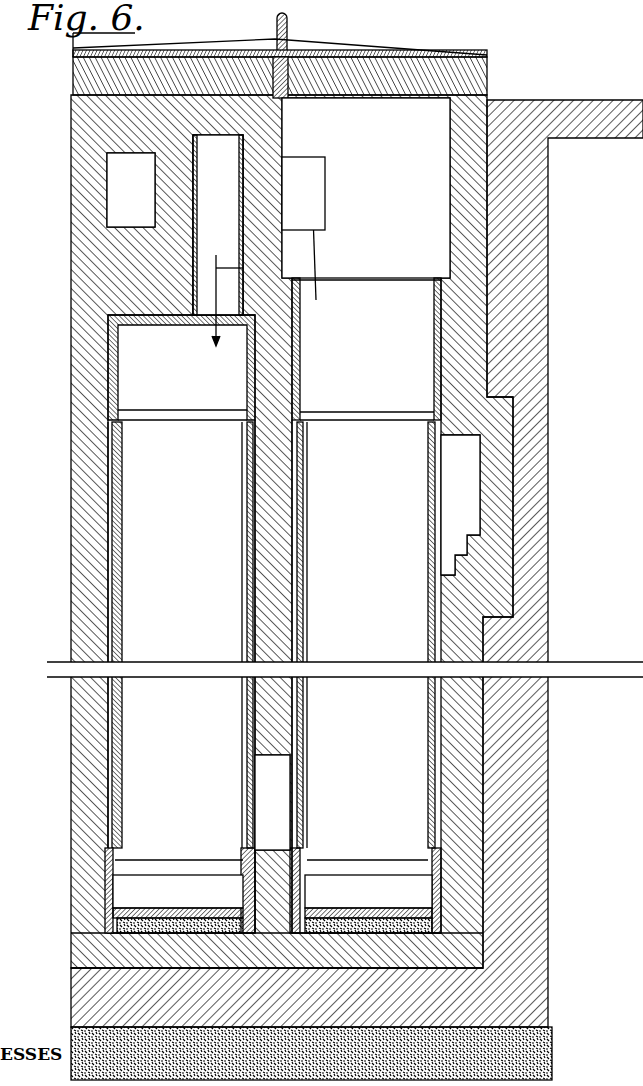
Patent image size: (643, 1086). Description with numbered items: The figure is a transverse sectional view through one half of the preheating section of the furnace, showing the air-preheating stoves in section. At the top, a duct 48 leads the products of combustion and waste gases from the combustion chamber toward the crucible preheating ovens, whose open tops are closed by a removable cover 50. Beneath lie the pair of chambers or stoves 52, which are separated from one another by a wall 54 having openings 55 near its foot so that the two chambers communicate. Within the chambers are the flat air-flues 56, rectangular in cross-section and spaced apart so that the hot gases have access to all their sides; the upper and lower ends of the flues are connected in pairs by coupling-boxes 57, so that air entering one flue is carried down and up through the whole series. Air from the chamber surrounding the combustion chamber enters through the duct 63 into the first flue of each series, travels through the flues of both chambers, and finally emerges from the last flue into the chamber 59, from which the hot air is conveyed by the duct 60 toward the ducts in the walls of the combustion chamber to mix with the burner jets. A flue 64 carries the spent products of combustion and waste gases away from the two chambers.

The duct 48 is at (131, 190).
The removable cover 50 is at (398, 85).
The chamber or stove 52 is at (113, 541).
The wall 54 is at (275, 575).
The opening 55 is at (278, 802).
The flat air-flue 56 is at (333, 506).
The coupling-box 57 is at (272, 904).
The chamber 59 is at (366, 199).
The duct 60 is at (305, 193).
The duct 63 is at (218, 240).
The flue 64 is at (463, 505).